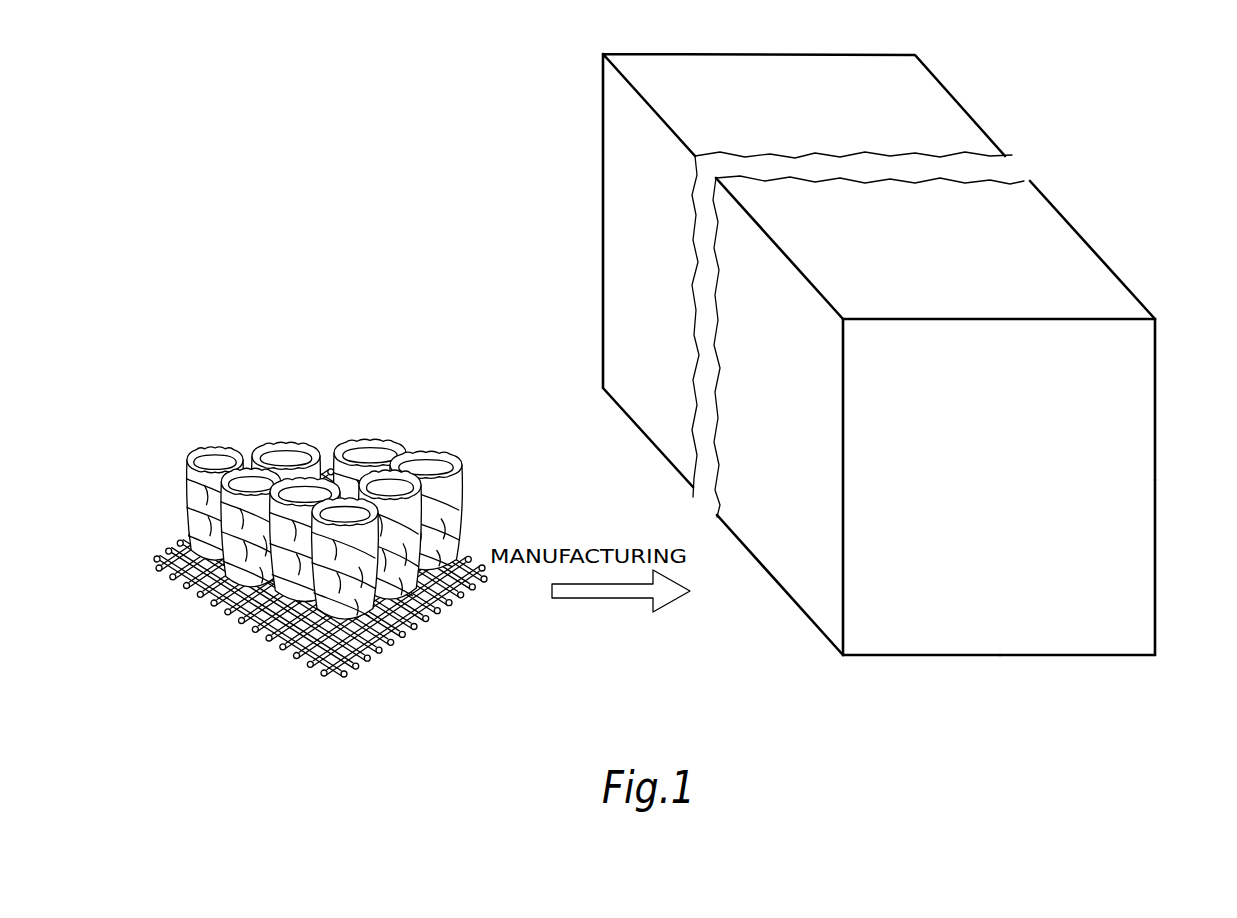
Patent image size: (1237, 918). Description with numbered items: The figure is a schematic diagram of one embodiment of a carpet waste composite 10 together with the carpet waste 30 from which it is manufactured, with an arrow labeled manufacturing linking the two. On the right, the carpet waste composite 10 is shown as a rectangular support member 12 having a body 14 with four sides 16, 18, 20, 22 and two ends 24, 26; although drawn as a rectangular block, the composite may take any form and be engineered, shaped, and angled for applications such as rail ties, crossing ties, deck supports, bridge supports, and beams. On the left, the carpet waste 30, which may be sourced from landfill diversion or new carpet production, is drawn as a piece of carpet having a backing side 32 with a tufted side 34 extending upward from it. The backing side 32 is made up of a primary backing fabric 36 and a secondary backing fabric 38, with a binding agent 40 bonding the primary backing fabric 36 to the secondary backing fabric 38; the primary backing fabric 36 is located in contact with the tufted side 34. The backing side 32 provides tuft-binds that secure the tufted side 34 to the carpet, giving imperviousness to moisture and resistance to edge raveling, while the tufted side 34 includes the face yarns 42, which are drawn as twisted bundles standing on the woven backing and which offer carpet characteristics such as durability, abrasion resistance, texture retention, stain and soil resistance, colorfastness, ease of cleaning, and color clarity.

The carpet waste composite 10 is at (1118, 212).
The rectangular support member 12 is at (968, 664).
The body 14 is at (1157, 507).
The side 16 is at (1020, 318).
The side 18 is at (1157, 424).
The side 20 is at (1045, 657).
The side 22 is at (842, 548).
The end 24 is at (1000, 499).
The end 26 is at (608, 227).
The carpet waste 30 is at (183, 418).
The backing side 32 is at (353, 675).
The tufted side 34 is at (303, 440).
The primary backing fabric 36 is at (407, 630).
The secondary backing fabric 38 is at (243, 625).
The binding agent 40 is at (192, 594).
The face yarns 42 is at (462, 525).